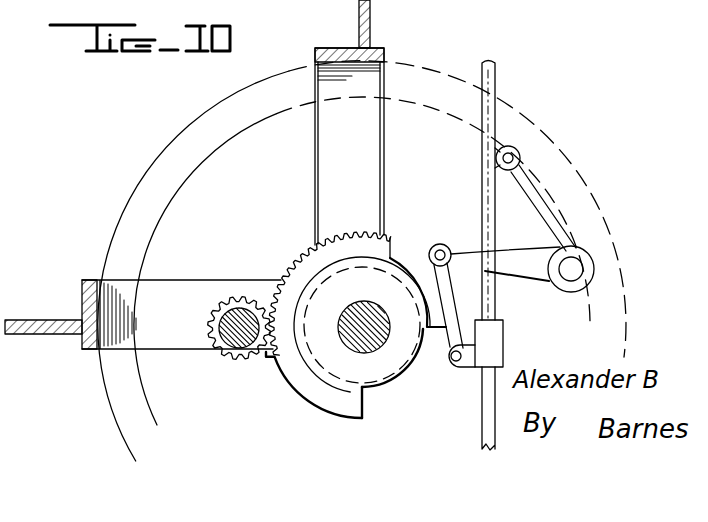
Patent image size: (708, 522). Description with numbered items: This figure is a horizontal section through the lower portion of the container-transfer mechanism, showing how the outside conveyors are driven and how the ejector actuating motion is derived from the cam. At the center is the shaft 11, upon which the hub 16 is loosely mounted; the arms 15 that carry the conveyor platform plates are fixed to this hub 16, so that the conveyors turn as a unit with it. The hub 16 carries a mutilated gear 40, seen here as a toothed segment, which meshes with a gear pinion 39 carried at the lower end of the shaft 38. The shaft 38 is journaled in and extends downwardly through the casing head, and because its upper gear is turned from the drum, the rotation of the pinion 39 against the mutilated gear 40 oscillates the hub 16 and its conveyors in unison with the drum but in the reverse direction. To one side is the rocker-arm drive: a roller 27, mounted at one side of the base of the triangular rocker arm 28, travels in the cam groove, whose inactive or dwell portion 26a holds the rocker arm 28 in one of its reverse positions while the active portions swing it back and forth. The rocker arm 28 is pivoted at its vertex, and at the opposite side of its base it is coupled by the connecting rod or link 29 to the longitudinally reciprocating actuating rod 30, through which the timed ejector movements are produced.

The shaft 11 is at (350, 334).
The arms 15 is at (358, 16).
The hub 16 is at (399, 262).
The inactive or dwell portion 26a is at (516, 137).
The roller 27 is at (560, 247).
The triangular rocker arm 28 is at (535, 272).
The connecting rod or link 29 is at (441, 302).
The actuating rod 30 is at (448, 248).
The shaft 38 is at (246, 302).
The gear pinion 39 is at (221, 308).
The mutilated gear 40 is at (338, 235).